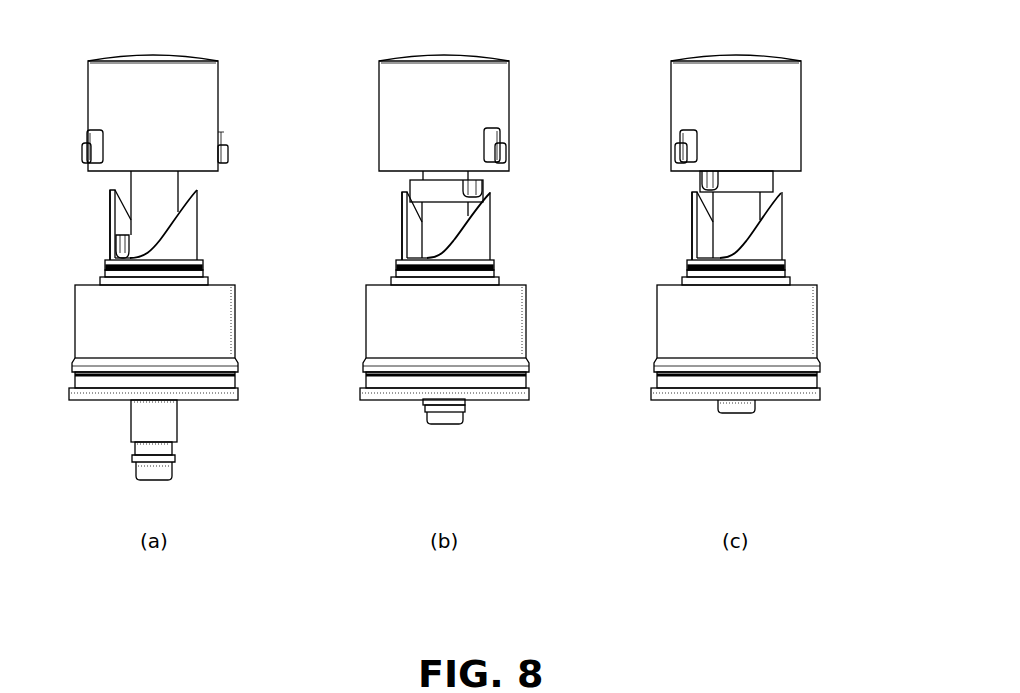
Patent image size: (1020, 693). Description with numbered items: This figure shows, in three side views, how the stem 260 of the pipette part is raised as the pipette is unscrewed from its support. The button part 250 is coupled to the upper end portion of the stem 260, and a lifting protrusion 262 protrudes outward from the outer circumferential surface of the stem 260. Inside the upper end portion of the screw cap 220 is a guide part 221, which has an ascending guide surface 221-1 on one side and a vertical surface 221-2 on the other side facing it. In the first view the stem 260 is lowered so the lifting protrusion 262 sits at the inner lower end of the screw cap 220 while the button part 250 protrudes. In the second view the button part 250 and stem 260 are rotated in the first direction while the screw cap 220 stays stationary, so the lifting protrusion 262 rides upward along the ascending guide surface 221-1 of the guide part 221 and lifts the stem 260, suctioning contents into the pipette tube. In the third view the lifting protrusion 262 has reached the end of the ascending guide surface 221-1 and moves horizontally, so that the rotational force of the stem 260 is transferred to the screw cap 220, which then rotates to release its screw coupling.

The button part 250 is at (205, 99).
The screw cap 220 is at (240, 326).
The guide part 221 is at (188, 243).
The ascending guide surface 221-1 is at (187, 209).
The vertical surface 221-2 is at (112, 208).
The lifting protrusion 262 is at (117, 242).
The stem 260 is at (177, 420).